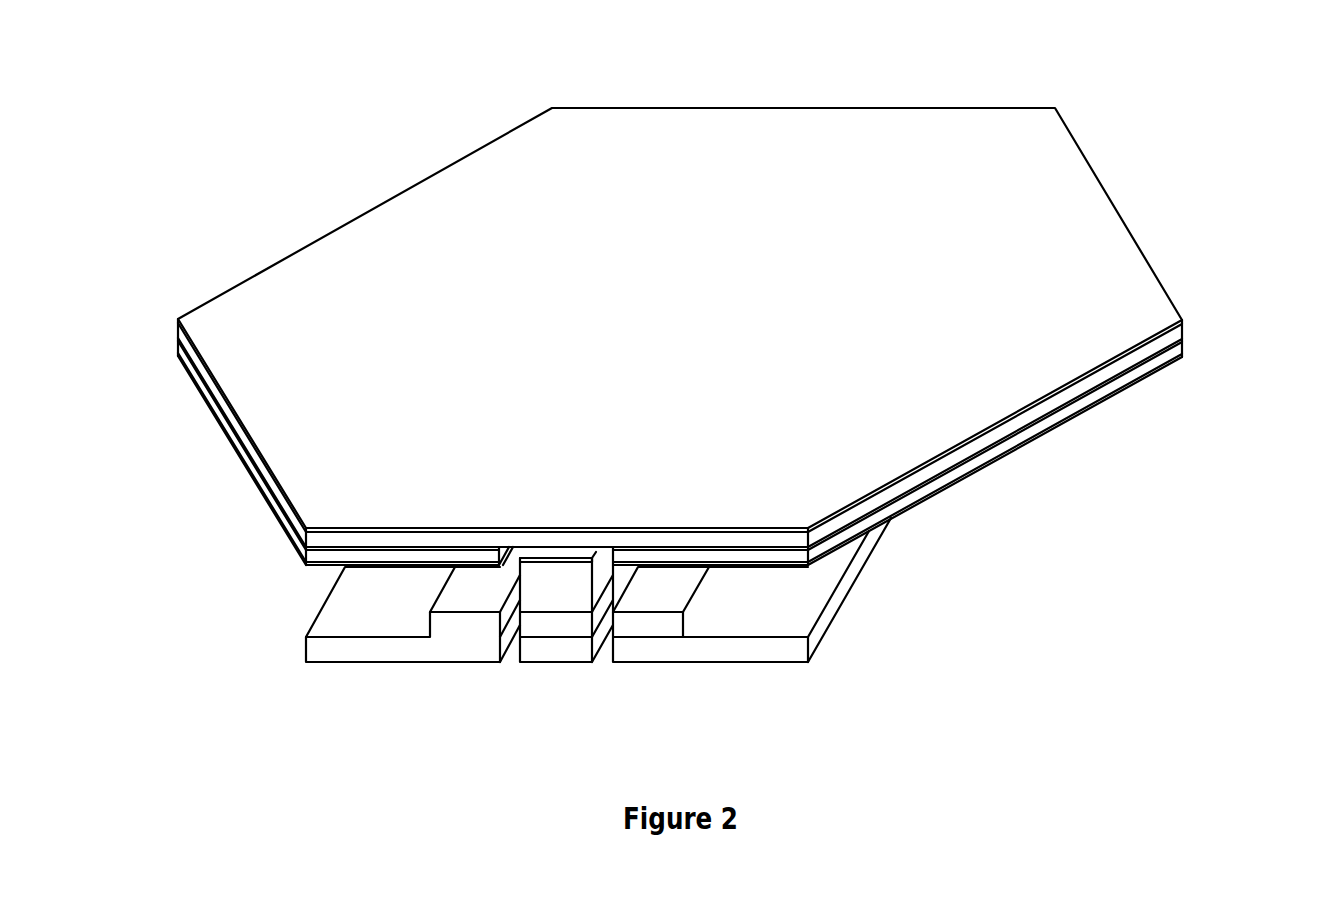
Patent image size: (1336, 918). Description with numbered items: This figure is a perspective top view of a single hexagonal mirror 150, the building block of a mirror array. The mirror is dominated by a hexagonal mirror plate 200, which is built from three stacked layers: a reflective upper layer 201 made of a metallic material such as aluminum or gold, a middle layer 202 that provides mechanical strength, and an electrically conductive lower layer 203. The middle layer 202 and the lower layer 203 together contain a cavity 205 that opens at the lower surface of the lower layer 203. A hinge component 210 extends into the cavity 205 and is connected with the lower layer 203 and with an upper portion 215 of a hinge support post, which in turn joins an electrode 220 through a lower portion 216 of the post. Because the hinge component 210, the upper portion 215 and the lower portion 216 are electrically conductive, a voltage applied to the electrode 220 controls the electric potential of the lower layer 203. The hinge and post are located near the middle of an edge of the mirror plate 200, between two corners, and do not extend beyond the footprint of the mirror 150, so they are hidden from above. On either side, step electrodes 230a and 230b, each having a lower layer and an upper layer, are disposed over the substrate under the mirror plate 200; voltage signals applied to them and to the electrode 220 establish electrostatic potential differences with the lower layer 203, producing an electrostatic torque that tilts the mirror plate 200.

The hexagonal mirror 150 is at (240, 106).
The hexagonal mirror plate 200 is at (1120, 207).
The reflective upper layer 201 is at (1186, 327).
The middle layer 202 is at (1186, 343).
The lower layer 203 is at (1186, 354).
The cavity 205 is at (505, 570).
The hinge component 210 is at (570, 552).
The upper portion of hinge support post 215 is at (565, 595).
The lower portion of hinge support post 216 is at (543, 622).
The electrode 220 is at (530, 650).
The step electrode 230a is at (667, 630).
The step electrode 230b is at (315, 613).